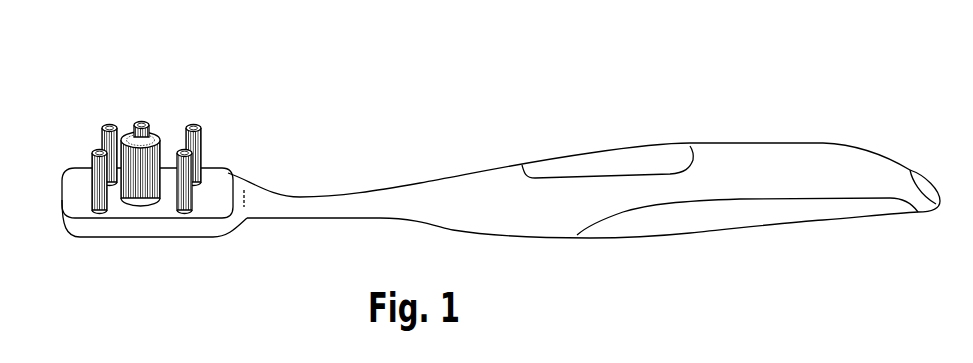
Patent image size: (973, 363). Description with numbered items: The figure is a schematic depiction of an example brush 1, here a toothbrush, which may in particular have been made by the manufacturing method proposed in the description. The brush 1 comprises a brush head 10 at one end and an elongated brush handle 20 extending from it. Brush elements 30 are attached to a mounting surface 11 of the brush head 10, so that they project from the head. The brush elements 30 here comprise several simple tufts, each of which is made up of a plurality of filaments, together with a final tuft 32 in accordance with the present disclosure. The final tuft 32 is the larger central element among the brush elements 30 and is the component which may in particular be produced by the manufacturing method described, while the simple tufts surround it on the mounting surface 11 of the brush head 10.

The brush 1 is at (597, 87).
The brush head 10 is at (155, 270).
The mounting surface 11 is at (213, 185).
The brush handle 20 is at (674, 262).
The brush elements 30 is at (94, 89).
The final tuft 32 is at (152, 140).